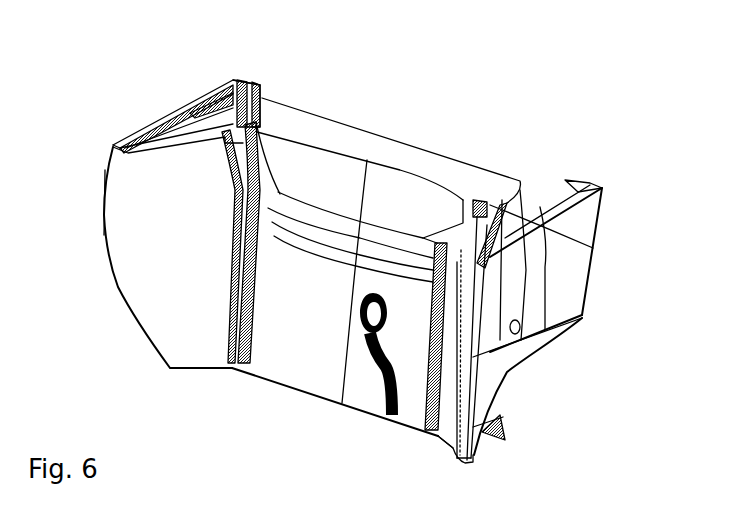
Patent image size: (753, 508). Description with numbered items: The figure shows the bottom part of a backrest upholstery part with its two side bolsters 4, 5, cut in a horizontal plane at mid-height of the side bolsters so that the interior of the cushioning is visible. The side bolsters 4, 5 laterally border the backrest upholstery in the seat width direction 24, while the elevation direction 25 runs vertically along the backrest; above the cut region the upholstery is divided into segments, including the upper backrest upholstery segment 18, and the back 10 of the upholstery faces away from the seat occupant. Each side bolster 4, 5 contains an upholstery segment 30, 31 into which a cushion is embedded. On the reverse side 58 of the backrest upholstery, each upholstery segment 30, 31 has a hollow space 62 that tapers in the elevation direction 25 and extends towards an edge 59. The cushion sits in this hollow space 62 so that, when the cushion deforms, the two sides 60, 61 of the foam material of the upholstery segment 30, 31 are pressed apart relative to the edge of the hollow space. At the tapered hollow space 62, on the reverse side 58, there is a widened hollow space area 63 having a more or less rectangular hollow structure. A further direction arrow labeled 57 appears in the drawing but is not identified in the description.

The side bolster 4 is at (123, 290).
The side bolster 5 is at (505, 435).
The back 10 is at (106, 178).
The upper backrest upholstery segment 18 is at (272, 96).
The seat width direction 24 is at (380, 432).
The elevation direction 25 is at (213, 75).
The upholstery segment 30 is at (192, 368).
The upholstery segment 31 is at (450, 442).
The vertical direction 57 is at (427, 22).
The reverse side 58 is at (593, 248).
The edge 59 is at (123, 142).
The side of the foam material 60 is at (150, 123).
The side of the foam material 61 is at (267, 110).
The hollow space 62 is at (182, 112).
The widened hollow space area 63 is at (252, 78).